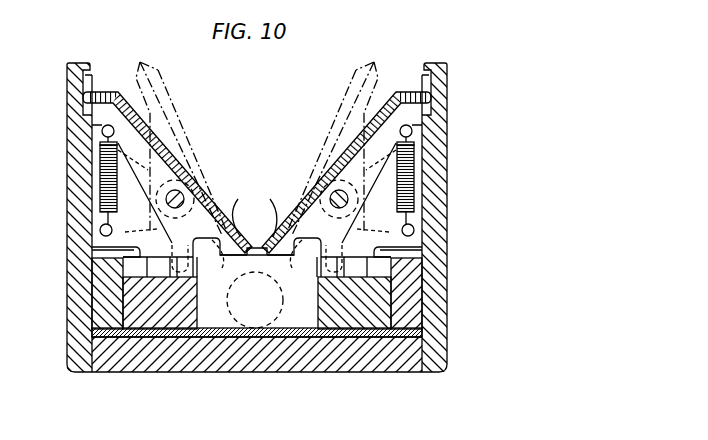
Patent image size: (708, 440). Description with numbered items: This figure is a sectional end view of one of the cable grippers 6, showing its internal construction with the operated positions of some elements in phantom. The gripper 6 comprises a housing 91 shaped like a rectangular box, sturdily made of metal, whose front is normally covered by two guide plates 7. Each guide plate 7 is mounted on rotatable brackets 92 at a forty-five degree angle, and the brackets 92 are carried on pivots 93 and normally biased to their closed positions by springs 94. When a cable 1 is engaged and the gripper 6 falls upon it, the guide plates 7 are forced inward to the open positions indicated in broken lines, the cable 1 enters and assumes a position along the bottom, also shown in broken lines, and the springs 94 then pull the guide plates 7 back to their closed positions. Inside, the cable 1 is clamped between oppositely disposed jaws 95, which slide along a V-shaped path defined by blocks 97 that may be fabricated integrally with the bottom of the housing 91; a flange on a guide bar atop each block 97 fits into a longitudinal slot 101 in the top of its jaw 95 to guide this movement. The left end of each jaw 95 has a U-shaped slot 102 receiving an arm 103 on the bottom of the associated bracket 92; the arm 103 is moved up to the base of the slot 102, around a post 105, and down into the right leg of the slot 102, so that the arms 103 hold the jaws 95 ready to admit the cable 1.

The cable 1 is at (277, 283).
The cable gripper 6 is at (231, 423).
The guide plate 7 is at (112, 92).
The housing 91 is at (67, 190).
The rotatable bracket 92 is at (257, 226).
The pivot 93 is at (200, 187).
The spring 94 is at (68, 162).
The jaw 95 is at (197, 316).
The block 97 is at (105, 332).
The longitudinal slot 101 is at (92, 247).
The U-shaped slot 102 is at (130, 268).
The arm 103 is at (100, 287).
The post 105 is at (115, 316).